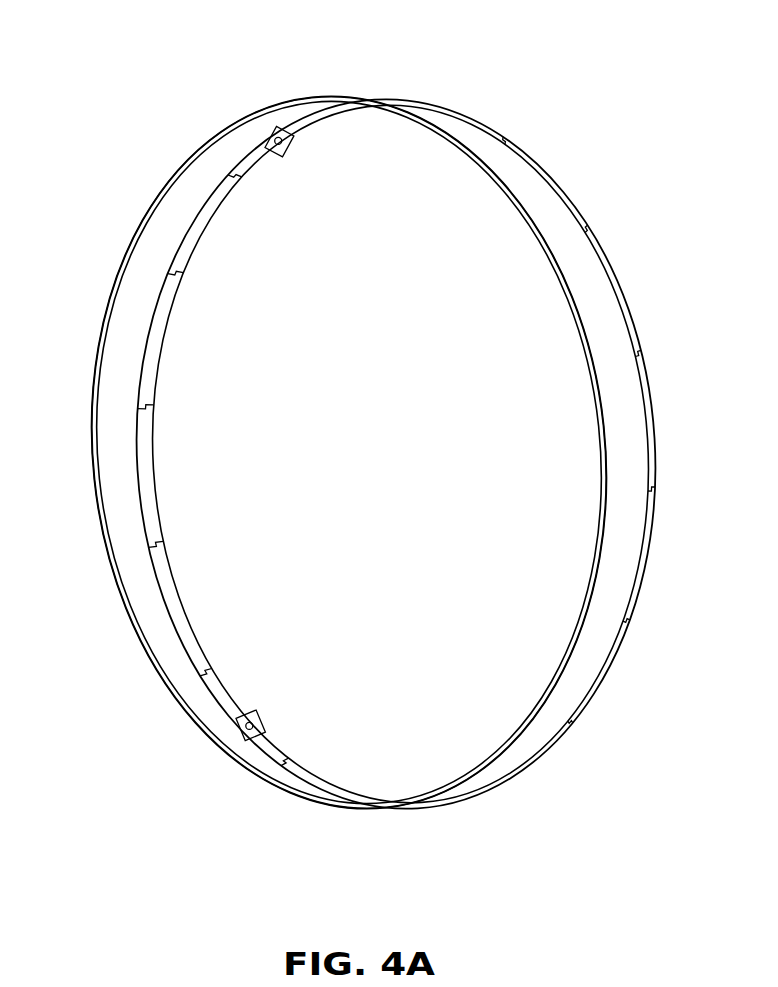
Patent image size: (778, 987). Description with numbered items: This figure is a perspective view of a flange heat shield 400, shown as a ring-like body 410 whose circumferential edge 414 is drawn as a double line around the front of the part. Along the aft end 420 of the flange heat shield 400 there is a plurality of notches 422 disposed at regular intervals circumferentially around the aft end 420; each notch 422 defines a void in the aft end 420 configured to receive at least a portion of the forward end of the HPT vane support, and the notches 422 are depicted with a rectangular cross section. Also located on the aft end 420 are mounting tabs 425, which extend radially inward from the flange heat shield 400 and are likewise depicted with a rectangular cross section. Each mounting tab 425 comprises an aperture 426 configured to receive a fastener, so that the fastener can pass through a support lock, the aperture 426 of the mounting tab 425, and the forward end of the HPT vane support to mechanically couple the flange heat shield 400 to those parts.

The flange heat shield 400 is at (387, 426).
The hoop body 410 is at (122, 266).
The outer rim edge 414 is at (134, 624).
The aft end 420 is at (172, 301).
The notch 422 is at (158, 547).
The mounting tab 425 is at (287, 152).
The aperture 426 is at (283, 143).